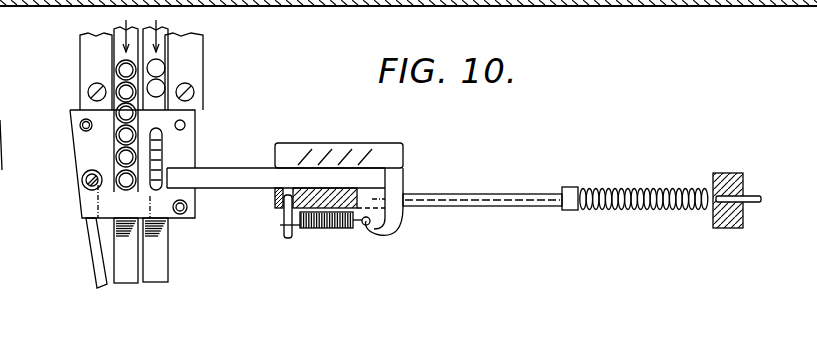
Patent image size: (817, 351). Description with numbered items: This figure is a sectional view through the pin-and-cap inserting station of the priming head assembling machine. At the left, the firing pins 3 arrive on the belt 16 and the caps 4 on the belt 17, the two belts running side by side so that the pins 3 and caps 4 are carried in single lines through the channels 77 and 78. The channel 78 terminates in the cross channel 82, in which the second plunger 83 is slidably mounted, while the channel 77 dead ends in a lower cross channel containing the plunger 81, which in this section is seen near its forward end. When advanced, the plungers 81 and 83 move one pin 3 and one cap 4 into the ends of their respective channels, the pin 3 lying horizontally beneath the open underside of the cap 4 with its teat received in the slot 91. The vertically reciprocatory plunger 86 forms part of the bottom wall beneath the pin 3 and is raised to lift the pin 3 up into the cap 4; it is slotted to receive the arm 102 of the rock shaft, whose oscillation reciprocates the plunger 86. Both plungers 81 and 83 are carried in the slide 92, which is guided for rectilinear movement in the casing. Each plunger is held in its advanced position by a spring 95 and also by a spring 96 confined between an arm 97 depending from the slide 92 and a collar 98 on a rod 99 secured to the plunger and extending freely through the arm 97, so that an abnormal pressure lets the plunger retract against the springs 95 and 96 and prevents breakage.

The firing pin 3 is at (160, 86).
The cap 4 is at (122, 157).
The belt 16 is at (165, 29).
The belt 17 is at (118, 28).
The channel 77 is at (167, 53).
The channel 78 is at (112, 52).
The plunger 81 is at (232, 181).
The cross channel 82 is at (103, 187).
The second plunger 83 is at (235, 172).
The vertically reciprocatory plunger 86 is at (77, 8).
The slot 91 is at (80, 184).
The slide 92 is at (332, 152).
The spring 95 is at (352, 227).
The spring 96 is at (625, 188).
The arm 97 is at (733, 173).
The collar 98 is at (568, 212).
The rod 99 is at (482, 198).
The arm 102 is at (92, 252).